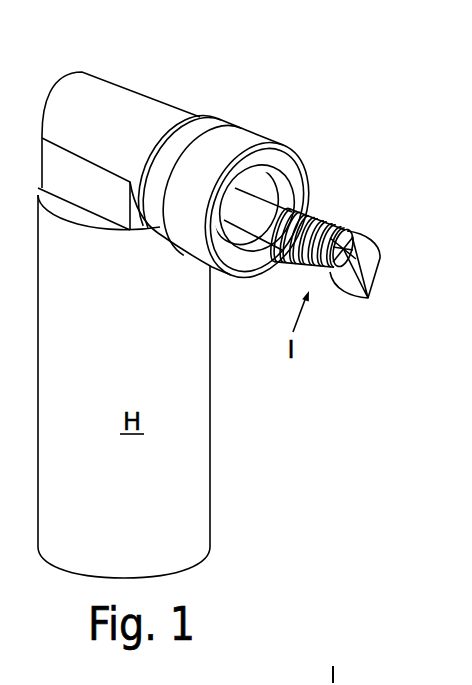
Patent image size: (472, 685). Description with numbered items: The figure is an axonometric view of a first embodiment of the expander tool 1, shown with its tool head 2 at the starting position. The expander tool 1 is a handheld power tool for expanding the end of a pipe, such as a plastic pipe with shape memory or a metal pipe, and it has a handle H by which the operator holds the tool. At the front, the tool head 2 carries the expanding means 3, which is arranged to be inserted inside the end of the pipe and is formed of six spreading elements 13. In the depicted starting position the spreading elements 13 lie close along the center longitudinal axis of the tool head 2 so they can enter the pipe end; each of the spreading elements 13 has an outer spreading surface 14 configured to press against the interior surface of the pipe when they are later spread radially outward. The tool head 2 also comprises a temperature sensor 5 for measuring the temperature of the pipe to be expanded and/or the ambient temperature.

The expander tool 1 is at (163, 102).
The tool head 2 is at (303, 158).
The expanding means 3 is at (342, 229).
The temperature sensor 5 is at (328, 214).
The spreading elements 13 is at (368, 299).
The outer spreading surface 14 is at (292, 265).